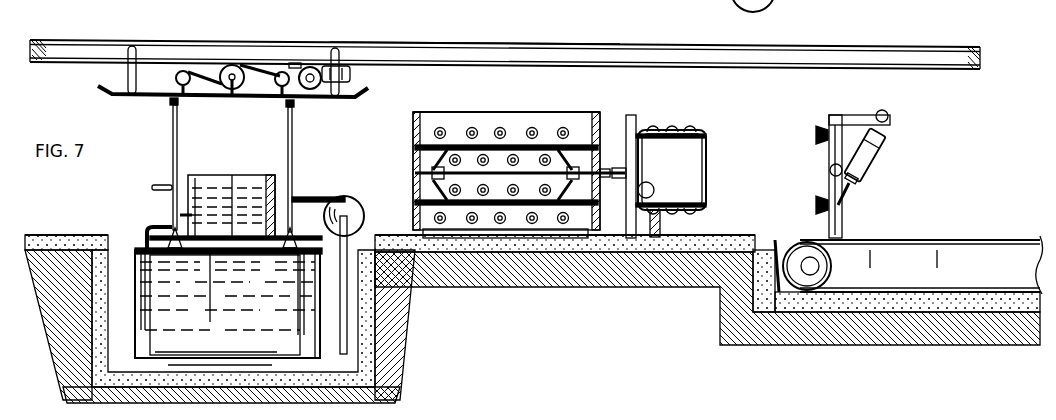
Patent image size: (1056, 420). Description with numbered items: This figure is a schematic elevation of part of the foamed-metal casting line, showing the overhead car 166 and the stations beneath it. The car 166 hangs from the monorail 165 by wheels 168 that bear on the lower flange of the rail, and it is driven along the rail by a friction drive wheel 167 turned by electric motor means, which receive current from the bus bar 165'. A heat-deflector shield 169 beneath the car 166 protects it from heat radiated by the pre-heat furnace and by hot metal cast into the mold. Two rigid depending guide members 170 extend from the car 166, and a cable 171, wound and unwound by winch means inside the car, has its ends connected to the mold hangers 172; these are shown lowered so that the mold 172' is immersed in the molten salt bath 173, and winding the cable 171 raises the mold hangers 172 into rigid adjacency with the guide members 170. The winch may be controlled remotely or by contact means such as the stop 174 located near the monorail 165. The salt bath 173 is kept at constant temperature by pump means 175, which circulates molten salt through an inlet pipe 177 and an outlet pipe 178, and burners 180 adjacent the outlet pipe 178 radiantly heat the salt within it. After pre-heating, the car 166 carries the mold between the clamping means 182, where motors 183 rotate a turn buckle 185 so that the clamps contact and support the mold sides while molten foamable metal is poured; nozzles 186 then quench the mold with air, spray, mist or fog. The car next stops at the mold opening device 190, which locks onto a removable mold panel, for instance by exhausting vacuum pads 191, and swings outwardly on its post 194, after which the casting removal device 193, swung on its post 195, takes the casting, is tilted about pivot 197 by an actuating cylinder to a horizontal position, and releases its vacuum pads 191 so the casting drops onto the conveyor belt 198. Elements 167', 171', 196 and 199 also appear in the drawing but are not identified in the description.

The monorail 165 is at (505, 46).
The bus bar 165' is at (475, 32).
The car 166 is at (217, 131).
The friction drive wheel 167 is at (368, 77).
The drive sheave 167' is at (327, 95).
The wheels 168 is at (140, 46).
The heat-deflector shield 169 is at (118, 95).
The guide members 170 is at (168, 100).
The cable 171 is at (250, 176).
The sheave 171' is at (232, 97).
The mold hangers 172 is at (231, 284).
The mold 172' is at (225, 305).
The salt bath 173 is at (125, 245).
The stop 174 is at (296, 62).
The pump means 175 is at (346, 200).
The inlet pipe 177 is at (356, 220).
The outlet pipe 178 is at (158, 222).
The burners 180 is at (218, 177).
The clamping means 182 is at (414, 143).
The motors 183 is at (645, 184).
The turn buckle 185 is at (414, 164).
The nozzles 186 is at (563, 128).
The mold opening device 190 is at (708, 165).
The vacuum pads 191 is at (683, 122).
The casting removal device 193 is at (849, 162).
The post 194 is at (631, 118).
The post 195 is at (826, 116).
The cylinder 196 is at (880, 150).
The pivot 197 is at (830, 170).
The conveyor belt 198 is at (913, 240).
The wheel 199 is at (733, 2).